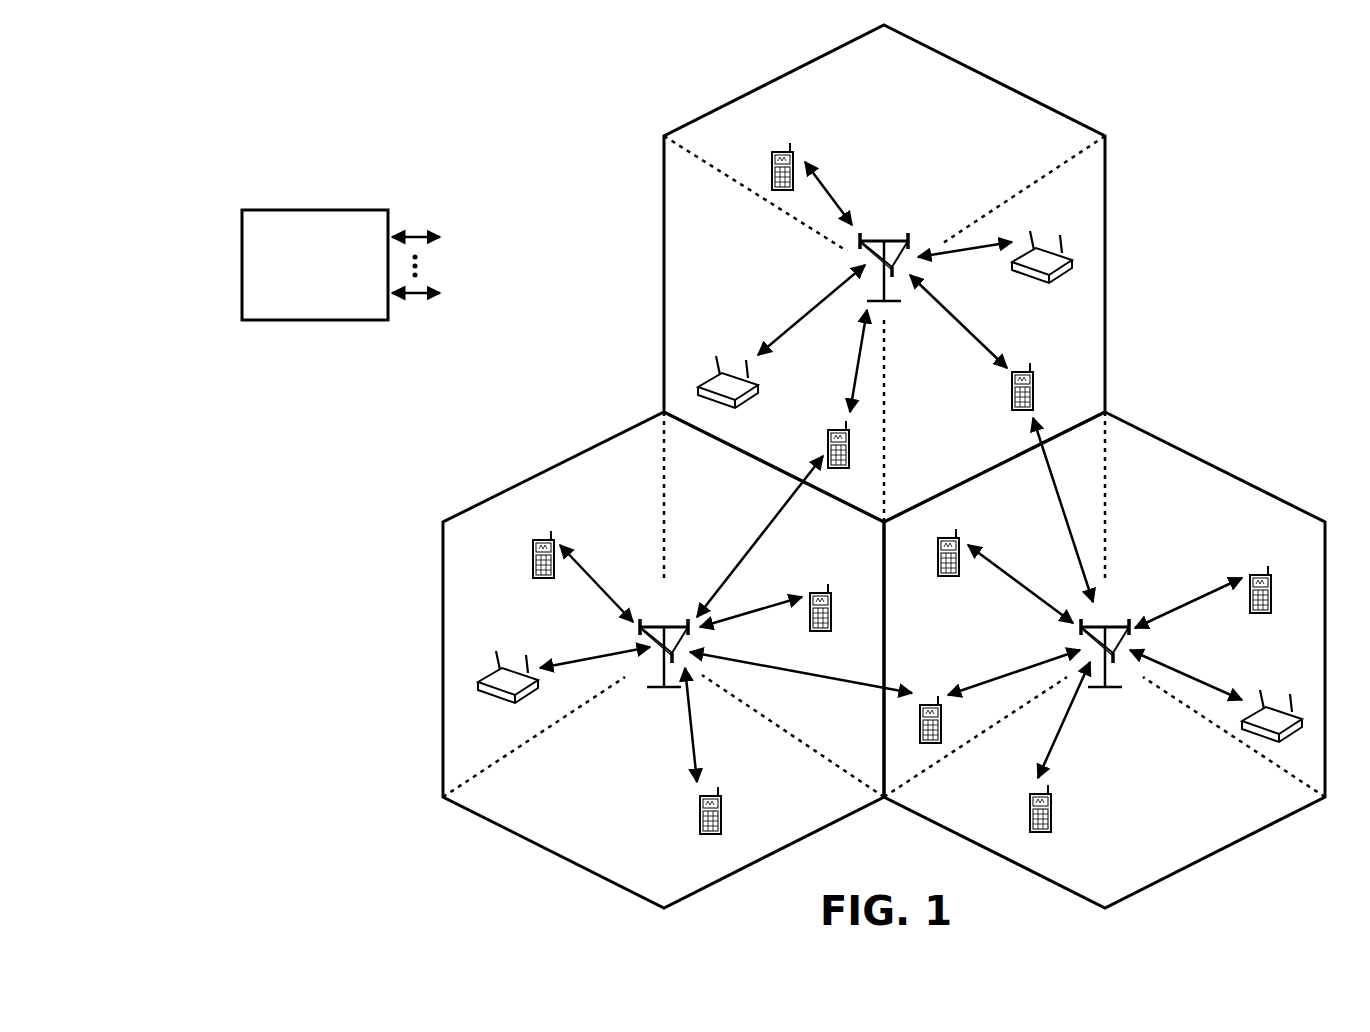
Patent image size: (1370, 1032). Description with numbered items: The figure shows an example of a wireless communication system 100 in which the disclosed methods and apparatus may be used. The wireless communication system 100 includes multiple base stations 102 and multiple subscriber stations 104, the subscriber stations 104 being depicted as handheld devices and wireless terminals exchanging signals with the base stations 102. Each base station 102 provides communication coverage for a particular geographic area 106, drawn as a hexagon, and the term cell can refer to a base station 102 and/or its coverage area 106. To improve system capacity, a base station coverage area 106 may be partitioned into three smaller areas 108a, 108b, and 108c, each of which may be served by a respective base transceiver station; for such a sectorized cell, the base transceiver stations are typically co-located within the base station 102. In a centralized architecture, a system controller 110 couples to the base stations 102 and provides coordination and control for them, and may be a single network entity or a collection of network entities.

The wireless communication system 100 is at (1257, 96).
The base station 102 is at (884, 240).
The subscriber station 104 is at (772, 163).
The geographic area 106 is at (1003, 77).
The smaller area 108a is at (886, 78).
The smaller area 108b is at (705, 235).
The smaller area 108c is at (959, 446).
The system controller 110 is at (310, 210).